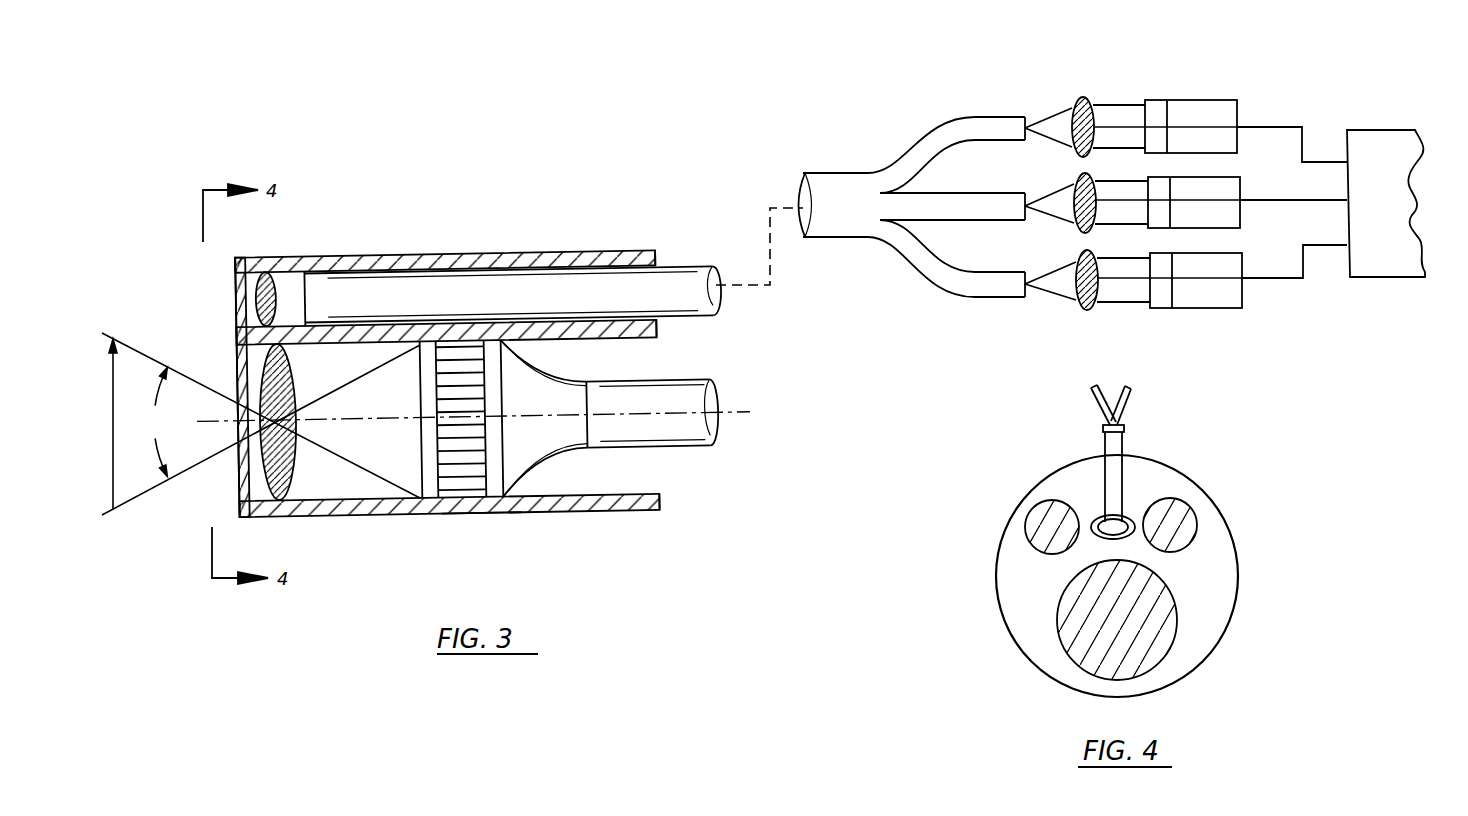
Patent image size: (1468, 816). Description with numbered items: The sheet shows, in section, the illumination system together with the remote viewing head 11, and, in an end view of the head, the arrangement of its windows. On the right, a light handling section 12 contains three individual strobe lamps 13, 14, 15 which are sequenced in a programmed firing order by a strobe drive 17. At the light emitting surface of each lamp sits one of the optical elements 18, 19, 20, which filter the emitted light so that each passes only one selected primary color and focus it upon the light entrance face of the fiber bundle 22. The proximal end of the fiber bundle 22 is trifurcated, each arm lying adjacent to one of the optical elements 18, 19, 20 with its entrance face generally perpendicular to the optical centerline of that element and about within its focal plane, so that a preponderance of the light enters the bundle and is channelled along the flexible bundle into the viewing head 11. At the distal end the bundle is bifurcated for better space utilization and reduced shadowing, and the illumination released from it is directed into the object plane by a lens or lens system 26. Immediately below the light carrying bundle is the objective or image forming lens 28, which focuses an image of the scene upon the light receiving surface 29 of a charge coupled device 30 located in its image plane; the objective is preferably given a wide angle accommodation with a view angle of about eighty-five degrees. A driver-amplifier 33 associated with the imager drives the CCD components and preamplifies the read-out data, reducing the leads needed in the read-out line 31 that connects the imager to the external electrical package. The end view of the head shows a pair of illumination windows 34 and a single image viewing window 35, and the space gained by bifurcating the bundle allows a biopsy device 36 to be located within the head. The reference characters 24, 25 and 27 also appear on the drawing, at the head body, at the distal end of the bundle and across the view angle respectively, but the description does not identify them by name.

In FIG. 3, the viewing head 11 is at (563, 236).
In FIG. 3, the light handling section 12 is at (1287, 115).
In FIG. 3, the strobe lamp 13 is at (1222, 105).
In FIG. 3, the strobe lamp 14 is at (1222, 187).
In FIG. 3, the strobe lamp 15 is at (1228, 265).
In FIG. 3, the strobe drive 17 is at (1365, 135).
In FIG. 3, the optical element 18 is at (1070, 110).
In FIG. 3, the optical element 19 is at (1075, 190).
In FIG. 3, the optical element 20 is at (1075, 268).
In FIG. 3, the fiber bundle 22 is at (683, 277).
In FIG. 3, the housing 24 is at (458, 522).
In FIG. 4, the housing 24 is at (990, 618).
In FIG. 3, the fiber bundle end 25 is at (309, 294).
In FIG. 3, the lens or lens system 26 is at (258, 318).
In FIG. 3, the field of view 27 is at (132, 360).
In FIG. 3, the objective or image forming lens 28 is at (310, 438).
In FIG. 3, the light receiving surface 29 is at (428, 470).
In FIG. 3, the charge coupled device 30 is at (473, 520).
In FIG. 3, the read-out line 31 is at (685, 388).
In FIG. 3, the driver-amplifier 33 is at (503, 460).
In FIG. 3, the illumination windows 34 is at (237, 288).
In FIG. 4, the illumination windows 34 is at (1030, 525).
In FIG. 3, the image viewing window 35 is at (240, 482).
In FIG. 4, the image viewing window 35 is at (1170, 635).
In FIG. 4, the biopsy device 36 is at (1125, 440).